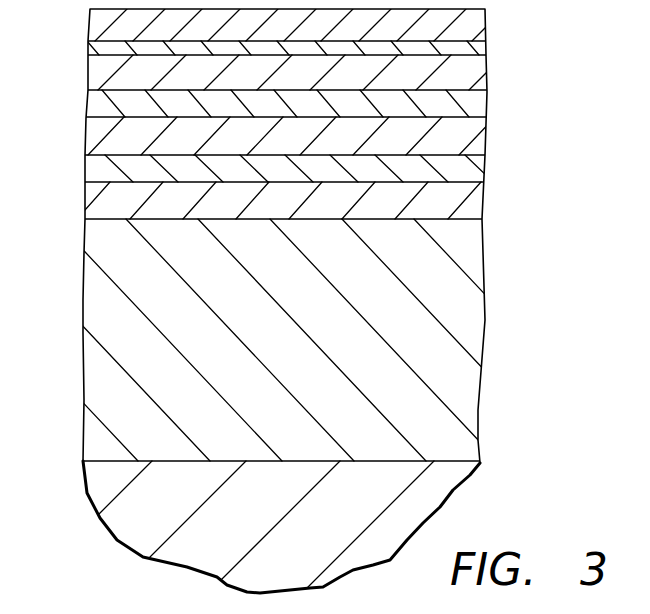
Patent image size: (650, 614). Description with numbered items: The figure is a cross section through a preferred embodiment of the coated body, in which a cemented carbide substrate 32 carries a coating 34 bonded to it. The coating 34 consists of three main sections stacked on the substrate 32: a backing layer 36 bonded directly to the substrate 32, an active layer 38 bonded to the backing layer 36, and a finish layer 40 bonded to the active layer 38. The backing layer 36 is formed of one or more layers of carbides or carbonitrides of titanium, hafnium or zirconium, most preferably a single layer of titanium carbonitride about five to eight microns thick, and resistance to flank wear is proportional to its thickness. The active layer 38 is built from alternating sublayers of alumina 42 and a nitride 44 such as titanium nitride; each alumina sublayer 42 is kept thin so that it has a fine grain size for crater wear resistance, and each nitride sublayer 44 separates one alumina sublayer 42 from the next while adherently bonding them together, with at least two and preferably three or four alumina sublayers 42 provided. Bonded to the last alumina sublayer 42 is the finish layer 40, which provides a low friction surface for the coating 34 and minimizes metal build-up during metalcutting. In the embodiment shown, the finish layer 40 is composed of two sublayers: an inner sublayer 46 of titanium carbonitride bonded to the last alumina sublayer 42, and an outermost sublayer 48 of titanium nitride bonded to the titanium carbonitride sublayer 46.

The cemented carbide substrate 32 is at (130, 527).
The coating 34 is at (321, 234).
The backing layer 36 is at (97, 315).
The active layer 38 is at (288, 137).
The finish layer 40 is at (293, 33).
The alumina sublayer 42 is at (98, 68).
The nitride sublayer 44 is at (97, 105).
The inner sublayer of titanium carbonitride 46 is at (95, 45).
The outermost sublayer of titanium nitride 48 is at (95, 27).